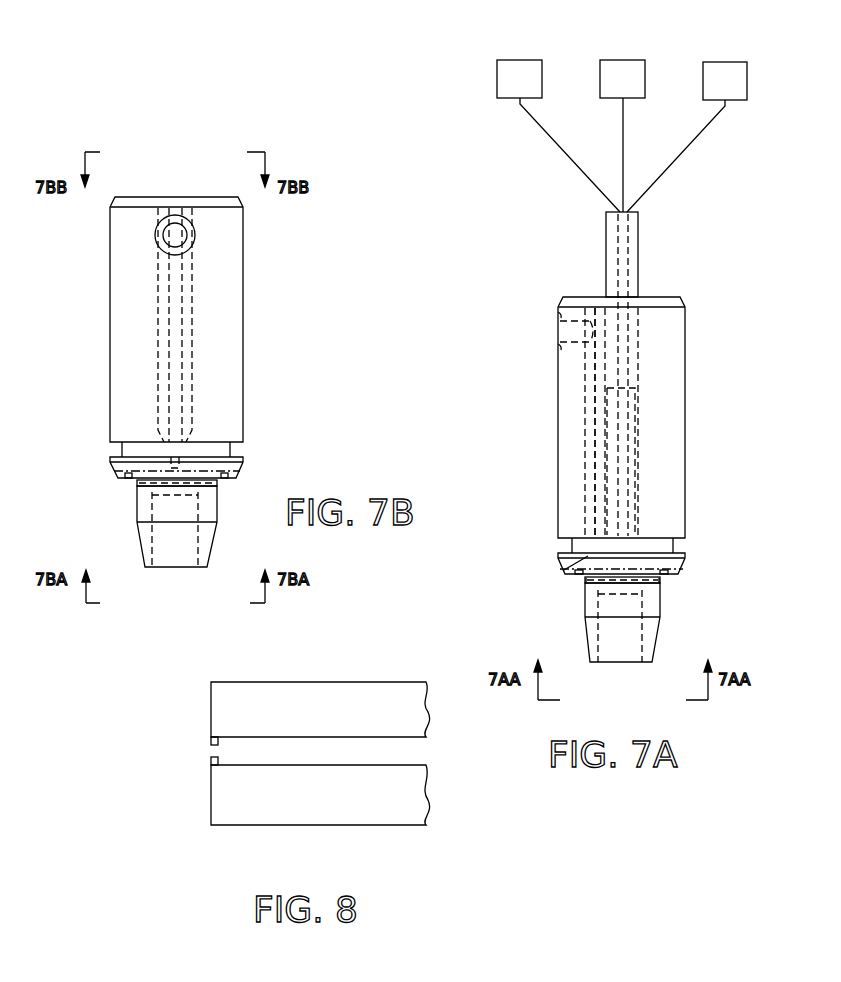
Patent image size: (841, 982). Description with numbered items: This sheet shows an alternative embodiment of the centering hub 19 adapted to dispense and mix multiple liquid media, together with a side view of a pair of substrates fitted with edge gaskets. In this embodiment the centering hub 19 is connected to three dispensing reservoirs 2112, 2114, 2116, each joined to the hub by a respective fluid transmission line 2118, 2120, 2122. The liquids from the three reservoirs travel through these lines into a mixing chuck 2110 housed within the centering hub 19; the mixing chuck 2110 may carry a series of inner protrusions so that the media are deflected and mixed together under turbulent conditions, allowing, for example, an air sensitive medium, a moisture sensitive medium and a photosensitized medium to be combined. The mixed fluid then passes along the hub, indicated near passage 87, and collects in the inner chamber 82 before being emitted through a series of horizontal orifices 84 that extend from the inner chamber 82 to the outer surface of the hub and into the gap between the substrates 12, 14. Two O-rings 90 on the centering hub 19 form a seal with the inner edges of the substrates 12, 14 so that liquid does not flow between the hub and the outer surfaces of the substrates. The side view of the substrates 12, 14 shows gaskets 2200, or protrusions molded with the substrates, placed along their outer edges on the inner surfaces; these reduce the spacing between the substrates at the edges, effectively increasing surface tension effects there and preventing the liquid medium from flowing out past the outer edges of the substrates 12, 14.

In FIG. 7A, the centering hub 19 is at (732, 346).
In FIG. 7B, the centering hub 19 is at (264, 292).
In FIG. 7A, the dispensing reservoir 2112 is at (497, 75).
In FIG. 7A, the dispensing reservoir 2114 is at (622, 59).
In FIG. 7A, the dispensing reservoir 2116 is at (725, 61).
In FIG. 7A, the fluid transmission line 2118 is at (550, 136).
In FIG. 7A, the fluid transmission line 2120 is at (623, 140).
In FIG. 7A, the fluid transmission line 2122 is at (692, 143).
In FIG. 7A, the passage 87 is at (590, 411).
In FIG. 7A, the mixing chuck 2110 is at (632, 425).
In FIG. 7A, the O-rings 90 is at (660, 579).
In FIG. 7A, the horizontal orifices 84 is at (585, 578).
In FIG. 7B, the horizontal orifices 84 is at (133, 483).
In FIG. 7A, the inner chamber 82 is at (628, 610).
In FIG. 8, the substrate 14 is at (327, 682).
In FIG. 8, the substrate 12 is at (290, 826).
In FIG. 8, the gaskets 2200 is at (210, 758).